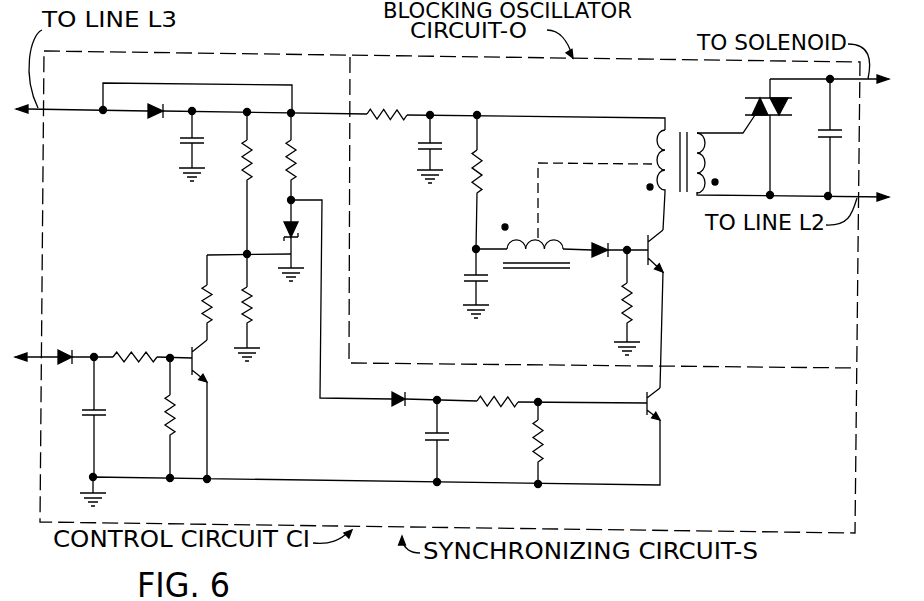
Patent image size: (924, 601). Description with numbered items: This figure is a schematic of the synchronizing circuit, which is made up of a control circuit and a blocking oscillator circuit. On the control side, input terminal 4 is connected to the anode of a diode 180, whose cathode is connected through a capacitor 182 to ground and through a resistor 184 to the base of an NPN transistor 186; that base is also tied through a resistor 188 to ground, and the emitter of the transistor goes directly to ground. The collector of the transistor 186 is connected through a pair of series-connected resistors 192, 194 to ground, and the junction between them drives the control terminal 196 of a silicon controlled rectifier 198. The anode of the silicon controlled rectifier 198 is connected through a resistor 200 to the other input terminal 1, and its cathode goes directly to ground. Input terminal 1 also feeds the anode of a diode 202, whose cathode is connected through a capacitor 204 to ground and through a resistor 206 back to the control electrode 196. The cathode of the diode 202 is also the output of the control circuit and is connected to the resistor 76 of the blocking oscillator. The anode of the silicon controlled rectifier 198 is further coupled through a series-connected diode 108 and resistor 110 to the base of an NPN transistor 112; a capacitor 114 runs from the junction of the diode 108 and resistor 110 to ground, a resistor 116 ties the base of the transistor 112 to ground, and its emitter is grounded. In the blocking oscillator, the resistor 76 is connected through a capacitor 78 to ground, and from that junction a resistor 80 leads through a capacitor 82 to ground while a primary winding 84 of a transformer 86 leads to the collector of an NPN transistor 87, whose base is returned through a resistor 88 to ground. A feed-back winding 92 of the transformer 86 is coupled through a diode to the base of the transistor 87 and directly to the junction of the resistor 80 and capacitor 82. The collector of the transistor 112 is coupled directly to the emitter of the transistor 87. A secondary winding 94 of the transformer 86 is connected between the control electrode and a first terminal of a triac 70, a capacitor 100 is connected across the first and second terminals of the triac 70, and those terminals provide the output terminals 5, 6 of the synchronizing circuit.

The input terminal 1 is at (42, 109).
The input terminal 4 is at (38, 355).
The output terminal 5 is at (868, 79).
The output terminal 6 is at (866, 197).
The triac 70 is at (756, 98).
The resistor 76 is at (385, 110).
The capacitor 78 is at (425, 150).
The resistor 80 is at (482, 178).
The capacitor 82 is at (470, 283).
The primary winding 84 is at (658, 152).
The transformer 86 is at (683, 120).
The NPN transistor 87 is at (655, 240).
The resistor 88 is at (622, 290).
The feed-back winding 92 is at (540, 270).
The secondary winding 94 is at (708, 163).
The capacitor 100 is at (822, 138).
The diode 108 is at (395, 405).
The resistor 110 is at (510, 398).
The NPN transistor 112 is at (655, 401).
The capacitor 114 is at (445, 440).
The resistor 116 is at (548, 445).
The diode 180 is at (62, 350).
The capacitor 182 is at (100, 410).
The resistor 184 is at (148, 355).
The NPN transistor 186 is at (192, 350).
The resistor 188 is at (166, 430).
The resistor 192 is at (207, 300).
The resistor 194 is at (250, 308).
The control terminal 196 is at (288, 248).
The silicon controlled rectifier 198 is at (300, 228).
The resistor 200 is at (295, 172).
The diode 202 is at (153, 116).
The capacitor 204 is at (185, 156).
The resistor 206 is at (243, 170).